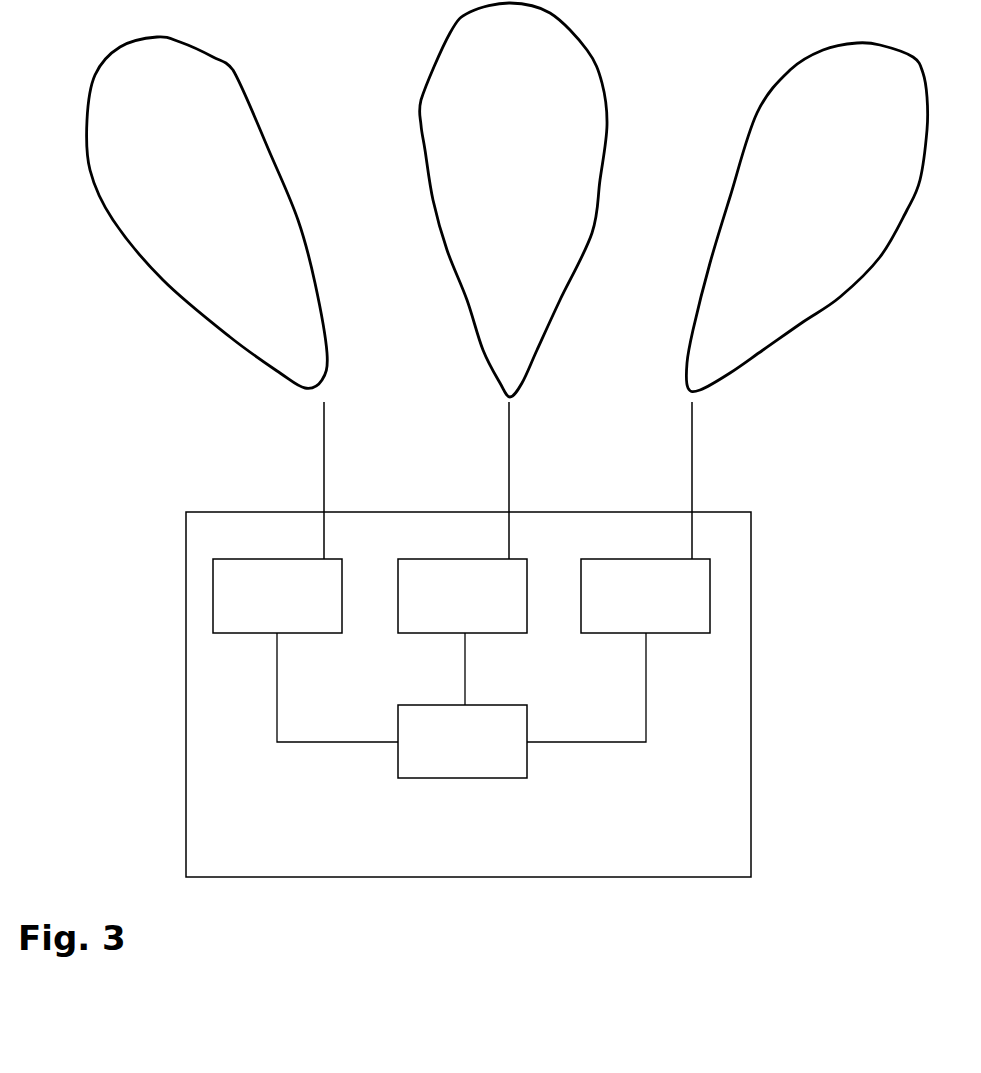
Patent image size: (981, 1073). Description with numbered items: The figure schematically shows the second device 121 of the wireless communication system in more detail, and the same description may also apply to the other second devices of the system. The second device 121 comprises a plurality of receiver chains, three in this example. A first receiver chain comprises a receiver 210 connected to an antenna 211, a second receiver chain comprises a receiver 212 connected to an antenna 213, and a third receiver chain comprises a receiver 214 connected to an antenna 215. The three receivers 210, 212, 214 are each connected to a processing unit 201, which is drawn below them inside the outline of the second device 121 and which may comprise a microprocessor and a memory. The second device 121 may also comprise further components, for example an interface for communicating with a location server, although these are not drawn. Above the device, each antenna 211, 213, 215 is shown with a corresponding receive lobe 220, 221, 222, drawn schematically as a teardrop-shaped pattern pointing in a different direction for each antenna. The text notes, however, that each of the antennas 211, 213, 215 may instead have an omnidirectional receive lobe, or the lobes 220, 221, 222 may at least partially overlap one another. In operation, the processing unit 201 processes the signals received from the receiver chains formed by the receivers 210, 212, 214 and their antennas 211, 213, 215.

The second device 121 is at (751, 818).
The processing unit 201 is at (527, 767).
The receiver 210 is at (300, 633).
The antenna 211 is at (324, 430).
The receiver 212 is at (490, 633).
The antenna 213 is at (509, 430).
The receiver 214 is at (667, 633).
The antenna 215 is at (692, 430).
The receive lobe 220 is at (315, 282).
The receive lobe 221 is at (583, 245).
The receive lobe 222 is at (803, 322).